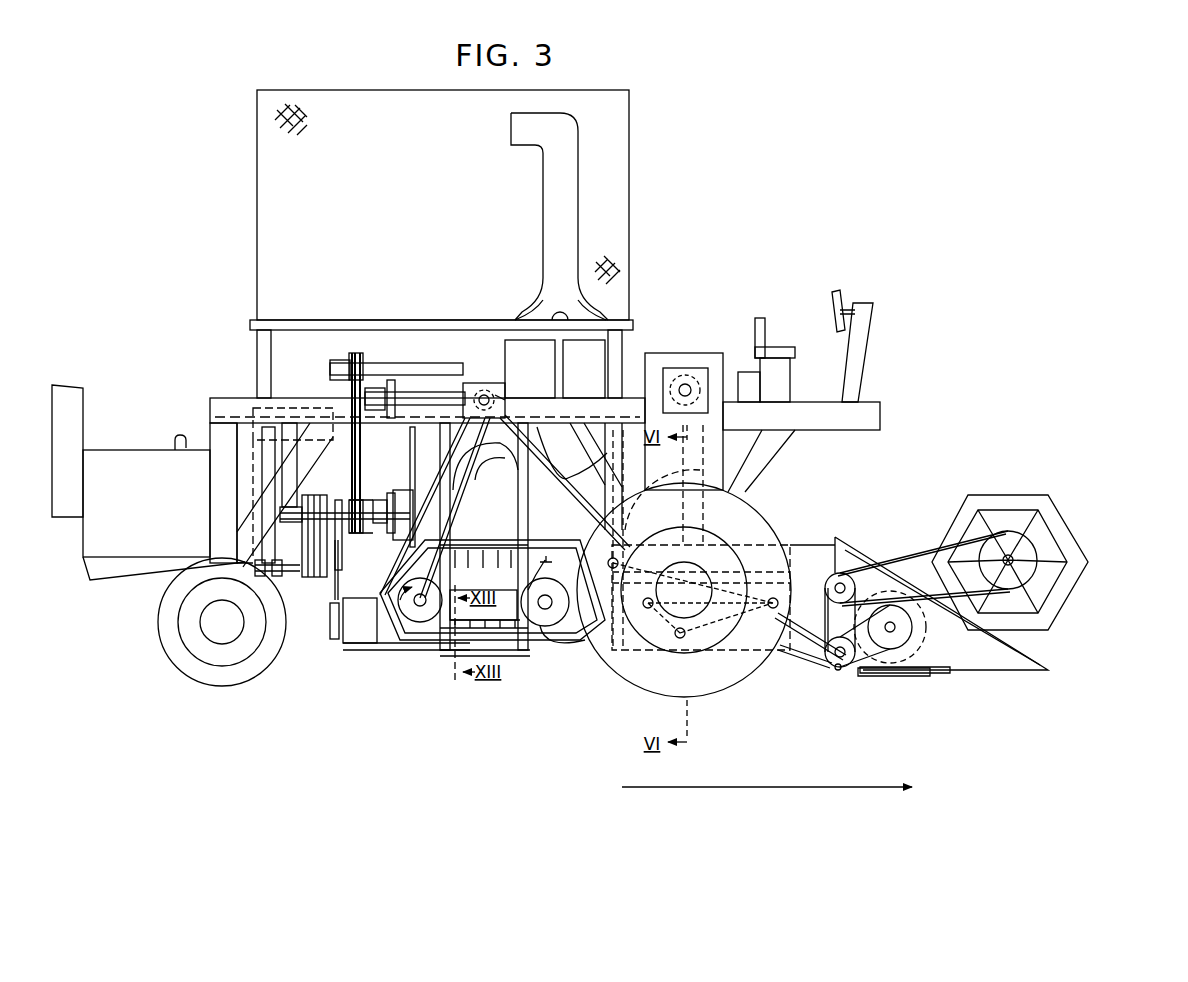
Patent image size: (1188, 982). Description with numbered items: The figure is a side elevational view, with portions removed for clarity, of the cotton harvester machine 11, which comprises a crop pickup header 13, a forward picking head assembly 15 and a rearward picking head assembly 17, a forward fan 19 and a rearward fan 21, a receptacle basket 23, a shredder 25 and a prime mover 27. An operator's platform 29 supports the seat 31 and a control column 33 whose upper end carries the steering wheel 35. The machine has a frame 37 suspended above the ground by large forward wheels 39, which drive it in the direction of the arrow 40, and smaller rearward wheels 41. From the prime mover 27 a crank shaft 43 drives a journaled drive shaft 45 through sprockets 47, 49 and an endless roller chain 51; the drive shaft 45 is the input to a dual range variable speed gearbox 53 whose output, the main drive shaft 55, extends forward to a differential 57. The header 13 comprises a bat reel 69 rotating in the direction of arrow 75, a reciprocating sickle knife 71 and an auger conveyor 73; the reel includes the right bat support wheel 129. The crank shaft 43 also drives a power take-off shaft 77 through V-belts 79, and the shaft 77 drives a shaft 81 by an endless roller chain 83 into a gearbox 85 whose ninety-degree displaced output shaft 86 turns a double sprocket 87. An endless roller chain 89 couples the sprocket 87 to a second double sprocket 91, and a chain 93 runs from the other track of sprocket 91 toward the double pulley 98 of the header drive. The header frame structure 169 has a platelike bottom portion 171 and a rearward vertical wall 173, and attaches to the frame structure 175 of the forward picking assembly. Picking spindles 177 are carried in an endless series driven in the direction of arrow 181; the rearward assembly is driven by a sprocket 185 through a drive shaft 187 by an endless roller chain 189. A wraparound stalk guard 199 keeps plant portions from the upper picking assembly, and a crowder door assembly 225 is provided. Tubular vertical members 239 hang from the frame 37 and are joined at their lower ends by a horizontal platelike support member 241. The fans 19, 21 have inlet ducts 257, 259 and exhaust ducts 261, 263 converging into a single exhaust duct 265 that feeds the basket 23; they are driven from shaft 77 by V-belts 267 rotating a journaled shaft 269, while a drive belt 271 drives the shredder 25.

The cotton harvester machine 11 is at (990, 117).
The crop pickup header 13 is at (1008, 456).
The forward picking head assembly 15 is at (745, 700).
The rearward picking head assembly 17 is at (455, 781).
The forward fan 19 is at (600, 355).
The rearward fan 21 is at (520, 345).
The receptacle basket 23 is at (443, 205).
The shredder 25 is at (360, 637).
The prime mover 27 is at (148, 482).
The operator's platform 29 is at (801, 447).
The seat 31 is at (762, 332).
The control column 33 is at (862, 363).
The steering wheel 35 is at (842, 300).
The frame 37 is at (230, 405).
The forward wheel 39 is at (650, 668).
The arrow 40 is at (758, 790).
The rearward wheel 41 is at (205, 680).
The crank shaft 43 is at (285, 567).
The drive shaft 45 is at (250, 430).
The sprocket 47 is at (256, 568).
The sprocket 49 is at (272, 407).
The endless roller chain 51 is at (265, 455).
The dual range variable speed gearbox 53 is at (312, 442).
The main drive shaft 55 is at (386, 428).
The differential 57 is at (700, 380).
The bat reel 69 is at (1030, 498).
The reciprocating sickle knife 71 is at (950, 675).
The auger conveyor 73 is at (925, 637).
The arrow 75 is at (1105, 540).
The power take-off shaft 77 is at (333, 497).
The V-belts 79 is at (334, 585).
The shaft 81 is at (420, 392).
The endless roller chain 83 is at (375, 370).
The gearbox 85 is at (466, 385).
The output shaft 86 is at (497, 395).
The double sprocket 87 is at (485, 395).
The endless roller chain 89 is at (562, 468).
The second double sprocket 91 is at (600, 652).
The endless roller chain 93 is at (797, 660).
The double pulley 98 is at (828, 672).
The right bat support wheel 129 is at (1088, 564).
The frame structure 169 is at (858, 560).
The platelike bottom portion 171 is at (870, 678).
The rearward vertical wall 173 is at (835, 545).
The frame structure 175 is at (825, 545).
The picking spindles 177 is at (500, 573).
The arrow 181 is at (417, 610).
The sprocket 185 is at (430, 603).
The drive shaft 187 is at (420, 607).
The endless roller chain 189 is at (485, 475).
The wraparound stalk guard 199 is at (547, 558).
The crowder door assembly 225 is at (508, 657).
The tubular vertically disposed members 239 is at (405, 540).
The horizontal platelike support member 241 is at (445, 660).
The inlet duct 257 is at (690, 437).
The inlet duct 259 is at (460, 505).
The exhaust duct 261 is at (600, 318).
The exhaust duct 263 is at (520, 318).
The single exhaust duct 265 is at (557, 207).
The V-belts 267 is at (360, 352).
The journaled shaft 269 is at (385, 380).
The drive belt 271 is at (332, 625).